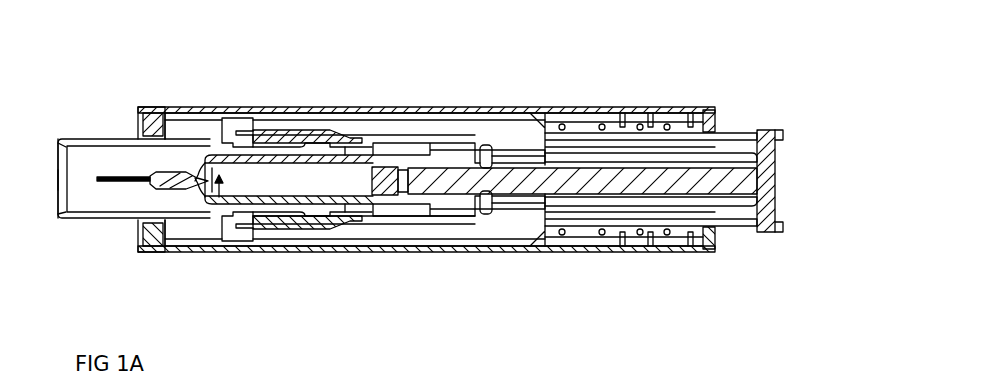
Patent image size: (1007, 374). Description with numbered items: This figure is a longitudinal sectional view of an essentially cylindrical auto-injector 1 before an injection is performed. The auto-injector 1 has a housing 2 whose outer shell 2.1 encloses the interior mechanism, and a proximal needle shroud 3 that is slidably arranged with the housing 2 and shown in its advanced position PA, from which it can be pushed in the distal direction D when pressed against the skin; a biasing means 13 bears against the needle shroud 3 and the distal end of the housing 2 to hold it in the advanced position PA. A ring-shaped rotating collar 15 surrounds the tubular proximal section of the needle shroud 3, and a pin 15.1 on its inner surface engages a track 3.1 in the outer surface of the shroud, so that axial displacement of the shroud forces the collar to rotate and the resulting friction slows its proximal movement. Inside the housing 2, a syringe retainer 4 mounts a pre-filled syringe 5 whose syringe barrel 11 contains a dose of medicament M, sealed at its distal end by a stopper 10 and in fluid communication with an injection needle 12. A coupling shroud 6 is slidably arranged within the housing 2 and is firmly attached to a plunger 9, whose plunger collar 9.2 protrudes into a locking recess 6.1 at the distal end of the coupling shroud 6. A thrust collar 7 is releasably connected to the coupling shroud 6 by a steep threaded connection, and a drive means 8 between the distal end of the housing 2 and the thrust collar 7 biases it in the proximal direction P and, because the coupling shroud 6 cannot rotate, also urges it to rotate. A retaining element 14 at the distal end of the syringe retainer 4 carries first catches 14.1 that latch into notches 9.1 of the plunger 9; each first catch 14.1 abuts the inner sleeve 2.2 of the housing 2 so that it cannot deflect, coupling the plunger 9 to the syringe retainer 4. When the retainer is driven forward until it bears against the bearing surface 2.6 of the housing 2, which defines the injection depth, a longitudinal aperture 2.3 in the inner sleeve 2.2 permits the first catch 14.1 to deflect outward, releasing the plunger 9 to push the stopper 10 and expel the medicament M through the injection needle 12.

The auto-injector 1 is at (75, 121).
The advanced position PA is at (94, 134).
The proximal direction P is at (46, 179).
The distal direction D is at (791, 182).
The medicament M is at (215, 193).
The housing 2 is at (440, 107).
The outer shell 2.1 is at (709, 179).
The inner sleeve 2.2 is at (466, 147).
The longitudinal aperture 2.3 is at (410, 220).
The bearing surface 2.6 is at (366, 176).
The needle shroud 3 is at (206, 152).
The track 3.1 is at (116, 136).
The syringe retainer 4 is at (336, 146).
The pre-filled syringe 5 is at (220, 202).
The coupling shroud 6 is at (662, 112).
The locking recess 6.1 is at (763, 130).
The thrust collar 7 is at (533, 241).
The drive means 8 is at (620, 236).
The plunger 9 is at (598, 175).
The notch 9.1 is at (484, 165).
The plunger collar 9.2 is at (771, 160).
The stopper 10 is at (335, 232).
The syringe barrel 11 is at (247, 207).
The injection needle 12 is at (118, 183).
The biasing means 13 is at (700, 247).
The retaining element 14 is at (488, 210).
The first catch 14.1 is at (491, 163).
The rotating collar 15 is at (152, 132).
The pin 15.1 is at (166, 136).